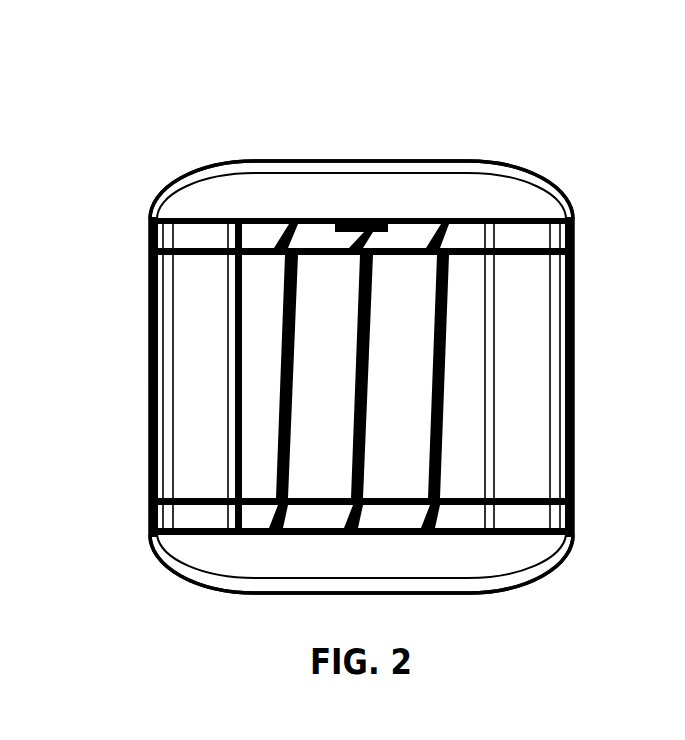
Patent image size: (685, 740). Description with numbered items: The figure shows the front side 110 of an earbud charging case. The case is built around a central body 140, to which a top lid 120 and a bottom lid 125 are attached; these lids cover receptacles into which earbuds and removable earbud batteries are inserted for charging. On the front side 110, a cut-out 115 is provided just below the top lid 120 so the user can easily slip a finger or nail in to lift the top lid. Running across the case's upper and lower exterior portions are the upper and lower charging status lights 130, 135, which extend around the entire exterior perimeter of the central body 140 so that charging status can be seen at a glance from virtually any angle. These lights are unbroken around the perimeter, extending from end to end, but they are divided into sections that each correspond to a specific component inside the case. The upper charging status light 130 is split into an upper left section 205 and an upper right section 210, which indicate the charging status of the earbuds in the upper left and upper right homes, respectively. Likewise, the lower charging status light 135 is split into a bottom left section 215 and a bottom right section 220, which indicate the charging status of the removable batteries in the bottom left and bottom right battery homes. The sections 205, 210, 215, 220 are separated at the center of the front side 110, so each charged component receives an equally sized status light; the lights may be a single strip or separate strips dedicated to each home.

The front side 110 is at (361, 323).
The cut-out 115 is at (377, 230).
The top lid 120 is at (235, 168).
The bottom lid 125 is at (263, 593).
The upper charging status light 130 is at (405, 266).
The lower charging status light 135 is at (400, 484).
The central body 140 is at (150, 408).
The upper left section 205 is at (205, 248).
The upper right section 210 is at (520, 248).
The bottom left section 215 is at (195, 503).
The bottom right section 220 is at (512, 505).